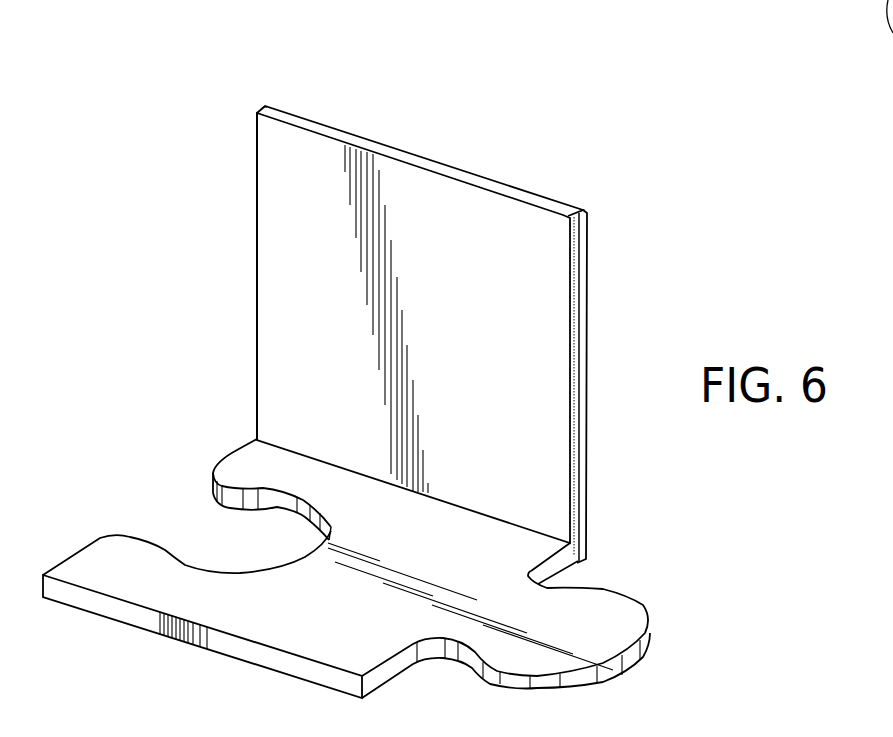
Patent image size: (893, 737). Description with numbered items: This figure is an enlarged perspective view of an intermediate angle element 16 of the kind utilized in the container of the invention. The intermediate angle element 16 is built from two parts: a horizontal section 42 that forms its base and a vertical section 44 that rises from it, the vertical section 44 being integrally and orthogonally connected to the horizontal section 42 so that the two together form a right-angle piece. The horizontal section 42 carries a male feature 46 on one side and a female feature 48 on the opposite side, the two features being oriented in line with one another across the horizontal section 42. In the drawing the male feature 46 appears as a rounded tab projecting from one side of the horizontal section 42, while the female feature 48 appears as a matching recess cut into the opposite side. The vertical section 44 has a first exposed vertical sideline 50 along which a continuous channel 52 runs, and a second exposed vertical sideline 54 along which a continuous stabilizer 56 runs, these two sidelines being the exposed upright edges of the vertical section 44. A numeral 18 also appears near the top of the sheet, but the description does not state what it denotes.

The intermediate angle element 16 is at (172, 250).
The adjacent component 18 is at (673, 0).
The horizontal section 42 is at (245, 620).
The vertical section 44 is at (270, 209).
The male feature 46 is at (625, 628).
The female feature 48 is at (175, 560).
The first exposed vertical sideline 50 is at (257, 363).
The continuous channel 52 is at (263, 111).
The second exposed vertical sideline 54 is at (575, 289).
The continuous stabilizer 56 is at (587, 489).